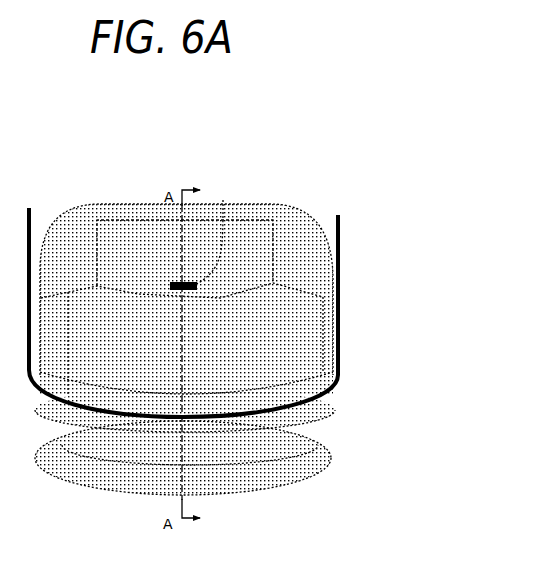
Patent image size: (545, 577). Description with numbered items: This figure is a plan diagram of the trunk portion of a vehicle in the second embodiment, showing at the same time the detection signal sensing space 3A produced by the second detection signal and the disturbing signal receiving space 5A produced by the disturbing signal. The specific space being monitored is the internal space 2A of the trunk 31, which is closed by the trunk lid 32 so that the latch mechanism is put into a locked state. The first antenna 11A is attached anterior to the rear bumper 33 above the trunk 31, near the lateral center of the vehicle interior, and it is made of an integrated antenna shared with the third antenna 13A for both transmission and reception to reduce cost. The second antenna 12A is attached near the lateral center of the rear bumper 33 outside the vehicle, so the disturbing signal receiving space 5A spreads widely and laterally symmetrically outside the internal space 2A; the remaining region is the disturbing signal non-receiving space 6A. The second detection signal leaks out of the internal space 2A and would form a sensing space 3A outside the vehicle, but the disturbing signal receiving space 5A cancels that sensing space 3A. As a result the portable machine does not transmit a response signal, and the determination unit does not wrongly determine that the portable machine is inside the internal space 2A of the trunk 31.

The internal space 2A is at (272, 322).
The detection signal sensing space 3A is at (153, 333).
The disturbing signal receiving space 5A is at (287, 462).
The disturbing signal non-receiving space 6A is at (100, 362).
The first antenna 11A is at (223, 200).
The third antenna 13A is at (256, 232).
The second antenna 12A is at (313, 430).
The trunk 31 is at (338, 352).
The trunk lid 32 is at (340, 327).
The rear bumper 33 is at (340, 402).